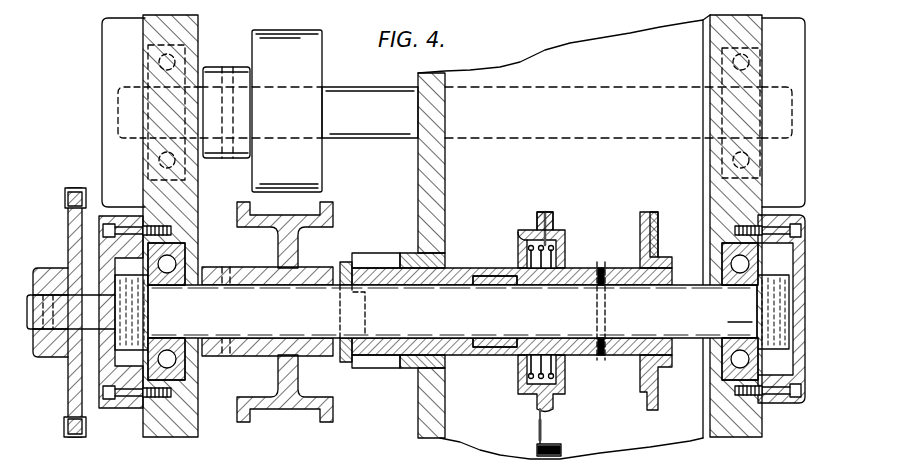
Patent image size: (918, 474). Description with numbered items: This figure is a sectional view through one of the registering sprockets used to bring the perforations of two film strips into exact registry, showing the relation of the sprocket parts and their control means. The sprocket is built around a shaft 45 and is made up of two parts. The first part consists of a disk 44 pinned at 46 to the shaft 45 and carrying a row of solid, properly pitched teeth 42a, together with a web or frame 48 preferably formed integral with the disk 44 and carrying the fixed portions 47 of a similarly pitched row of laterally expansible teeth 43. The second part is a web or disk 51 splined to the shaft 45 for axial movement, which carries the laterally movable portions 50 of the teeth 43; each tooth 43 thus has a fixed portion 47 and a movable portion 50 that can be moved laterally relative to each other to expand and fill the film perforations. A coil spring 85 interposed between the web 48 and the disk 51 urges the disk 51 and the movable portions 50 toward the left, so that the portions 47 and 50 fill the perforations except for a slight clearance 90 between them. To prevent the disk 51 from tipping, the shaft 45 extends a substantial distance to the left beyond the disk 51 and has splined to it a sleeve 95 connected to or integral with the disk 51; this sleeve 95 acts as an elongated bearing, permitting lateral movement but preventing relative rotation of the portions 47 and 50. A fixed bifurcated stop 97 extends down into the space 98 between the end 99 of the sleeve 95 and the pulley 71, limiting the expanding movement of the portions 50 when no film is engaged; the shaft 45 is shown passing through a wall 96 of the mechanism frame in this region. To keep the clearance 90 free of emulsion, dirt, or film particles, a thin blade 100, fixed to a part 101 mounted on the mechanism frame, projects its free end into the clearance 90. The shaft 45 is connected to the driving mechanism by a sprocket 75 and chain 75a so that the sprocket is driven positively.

The teeth 42a is at (664, 202).
The laterally expansible teeth 43 is at (546, 212).
The disk 44 is at (640, 232).
The shaft 45 is at (408, 312).
The pin 46 is at (605, 358).
The fixed portion 47 is at (553, 216).
The web 48 is at (566, 233).
The laterally movable portion 50 is at (538, 212).
The web 51 is at (518, 232).
The pulley 71 is at (335, 210).
The sprocket 75 is at (72, 231).
The chain 75a is at (65, 426).
The coil spring 85 is at (560, 388).
The clearance 90 is at (538, 422).
The sleeve 95 is at (458, 268).
The casing wall 96 is at (420, 155).
The bifurcated stop 97 is at (347, 262).
The space 98 is at (338, 358).
The end 99 is at (356, 352).
The blade 100 is at (544, 430).
The part 101 is at (562, 451).